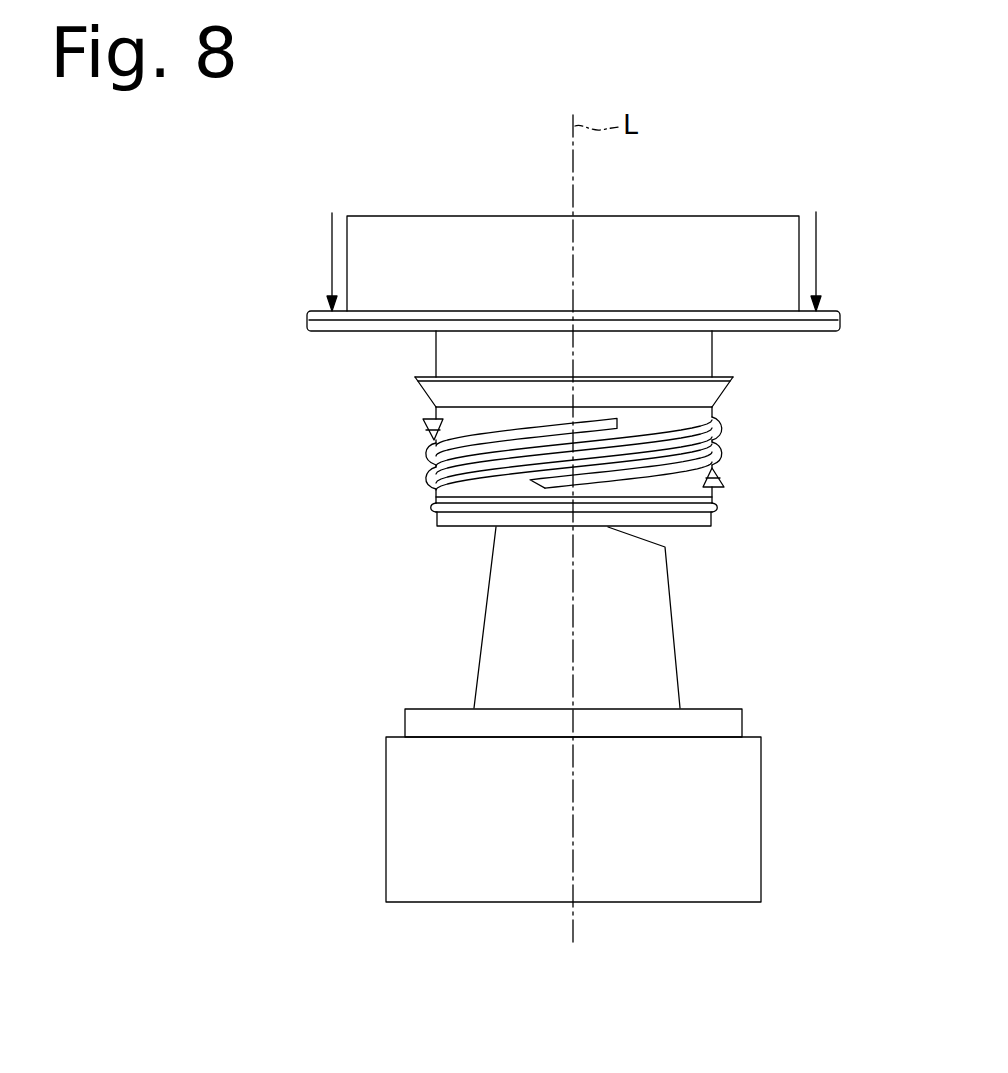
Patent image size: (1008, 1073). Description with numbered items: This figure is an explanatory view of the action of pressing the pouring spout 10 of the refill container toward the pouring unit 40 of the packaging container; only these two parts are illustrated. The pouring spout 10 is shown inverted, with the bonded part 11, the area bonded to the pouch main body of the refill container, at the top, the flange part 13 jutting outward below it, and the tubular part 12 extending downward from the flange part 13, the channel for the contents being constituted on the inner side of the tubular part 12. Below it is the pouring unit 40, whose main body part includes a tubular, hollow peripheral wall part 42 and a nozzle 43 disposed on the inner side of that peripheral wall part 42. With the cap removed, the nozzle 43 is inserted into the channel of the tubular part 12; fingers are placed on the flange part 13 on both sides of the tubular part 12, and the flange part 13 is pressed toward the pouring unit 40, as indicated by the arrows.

The pouring spout 10 is at (378, 372).
The bonded part 11 is at (713, 217).
The tubular part 12 is at (713, 408).
The flange part 13 is at (348, 332).
The pouring unit 40 is at (760, 657).
The peripheral wall part 42 is at (762, 787).
The nozzle 43 is at (670, 590).